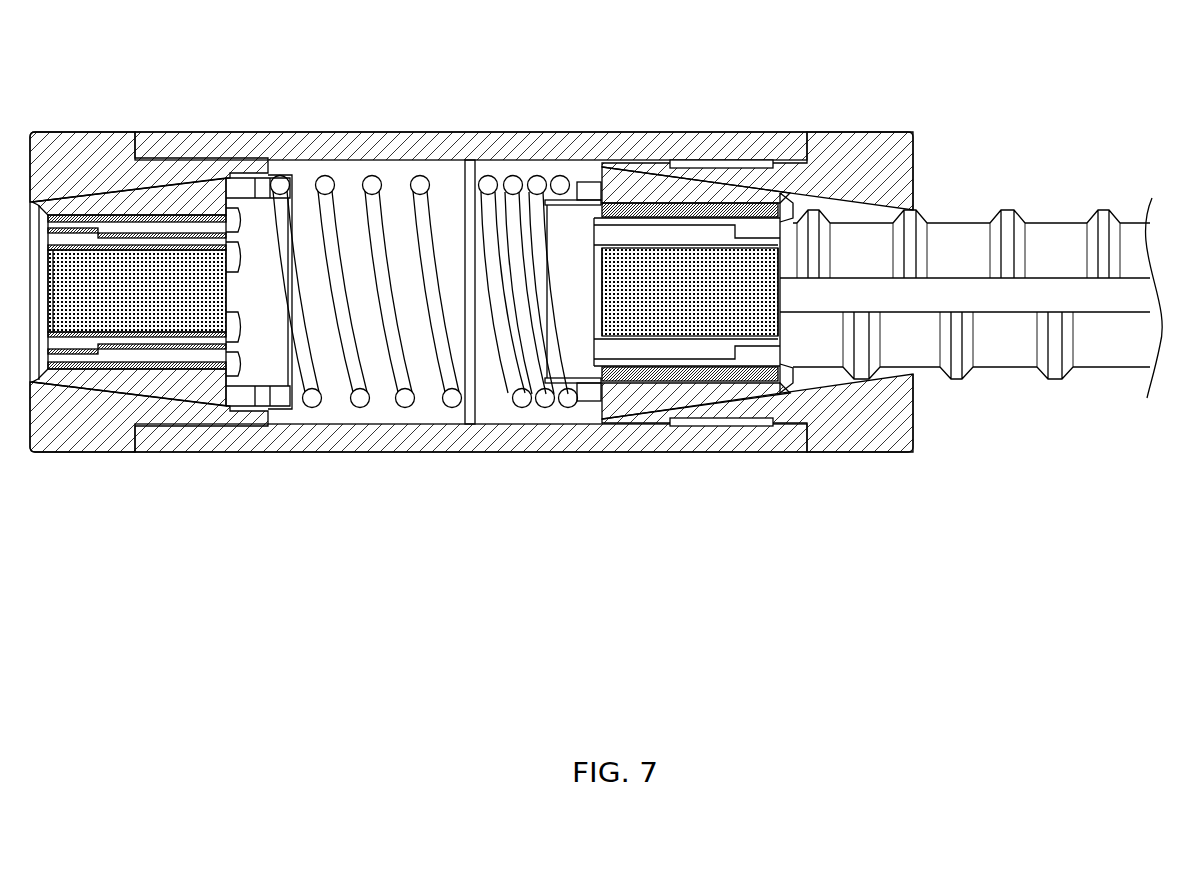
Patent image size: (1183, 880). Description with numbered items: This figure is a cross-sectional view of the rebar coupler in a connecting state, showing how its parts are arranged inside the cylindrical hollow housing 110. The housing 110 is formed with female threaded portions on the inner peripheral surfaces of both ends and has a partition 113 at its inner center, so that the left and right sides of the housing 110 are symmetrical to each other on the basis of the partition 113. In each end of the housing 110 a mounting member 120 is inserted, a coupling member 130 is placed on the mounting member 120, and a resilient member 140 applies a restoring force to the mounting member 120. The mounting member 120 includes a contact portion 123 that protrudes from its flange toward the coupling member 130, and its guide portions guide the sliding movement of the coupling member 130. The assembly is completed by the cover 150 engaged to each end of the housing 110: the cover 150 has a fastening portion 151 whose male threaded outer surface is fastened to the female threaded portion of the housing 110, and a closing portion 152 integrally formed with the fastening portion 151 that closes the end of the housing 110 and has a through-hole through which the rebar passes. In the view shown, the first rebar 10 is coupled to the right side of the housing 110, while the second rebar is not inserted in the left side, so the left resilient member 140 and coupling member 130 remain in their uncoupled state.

The first rebar 10 is at (988, 372).
The cylindrical hollow housing 110 is at (330, 133).
The partition 113 is at (466, 160).
The mounting member 120 is at (240, 133).
The contact portion 123 is at (592, 300).
The coupling member 130 is at (103, 310).
The resilient member 140 is at (402, 407).
The cover 150 is at (772, 52).
The fastening portion 151 is at (772, 135).
The closing portion 152 is at (860, 160).